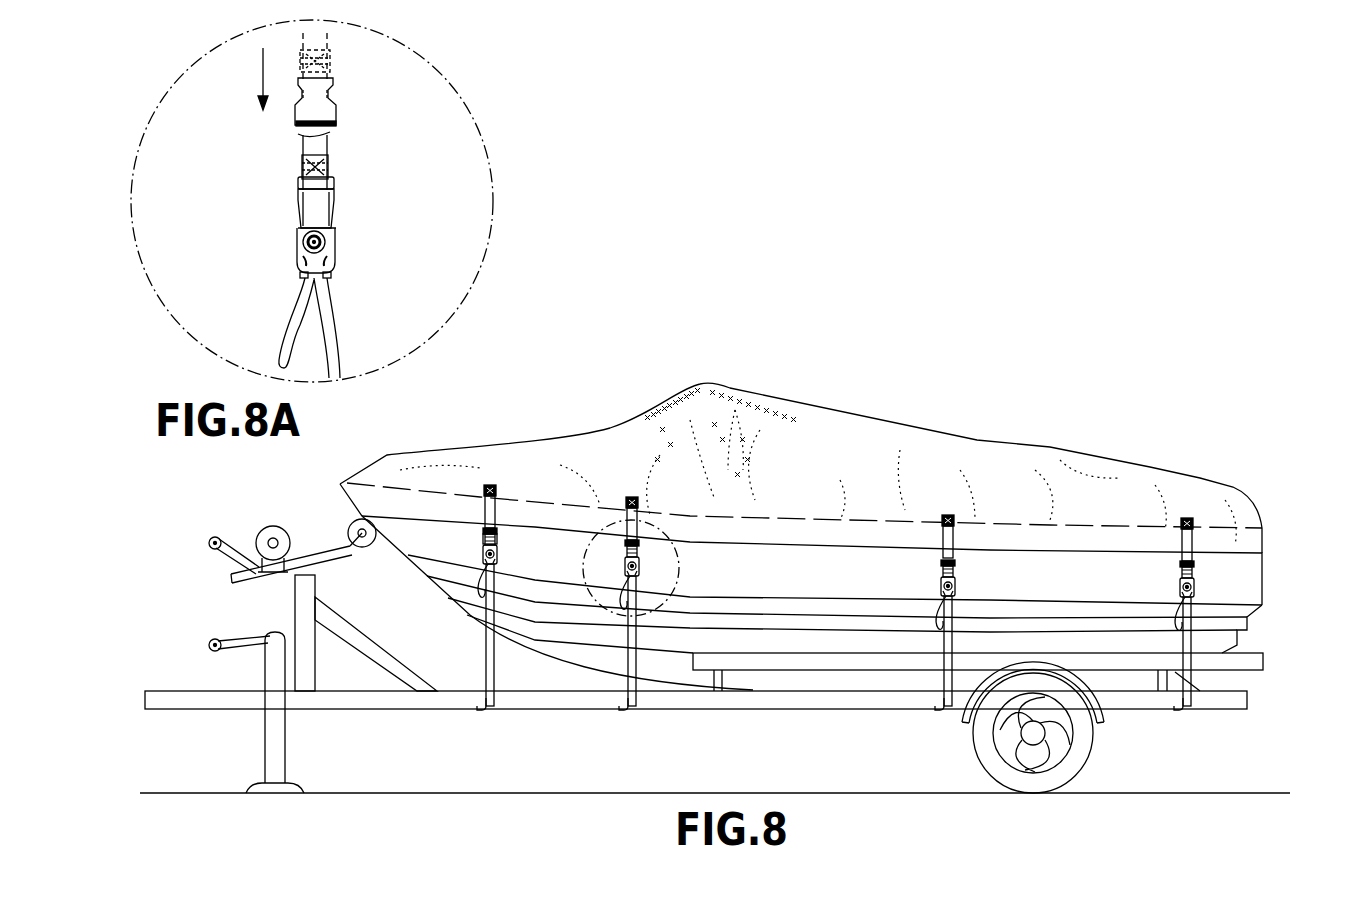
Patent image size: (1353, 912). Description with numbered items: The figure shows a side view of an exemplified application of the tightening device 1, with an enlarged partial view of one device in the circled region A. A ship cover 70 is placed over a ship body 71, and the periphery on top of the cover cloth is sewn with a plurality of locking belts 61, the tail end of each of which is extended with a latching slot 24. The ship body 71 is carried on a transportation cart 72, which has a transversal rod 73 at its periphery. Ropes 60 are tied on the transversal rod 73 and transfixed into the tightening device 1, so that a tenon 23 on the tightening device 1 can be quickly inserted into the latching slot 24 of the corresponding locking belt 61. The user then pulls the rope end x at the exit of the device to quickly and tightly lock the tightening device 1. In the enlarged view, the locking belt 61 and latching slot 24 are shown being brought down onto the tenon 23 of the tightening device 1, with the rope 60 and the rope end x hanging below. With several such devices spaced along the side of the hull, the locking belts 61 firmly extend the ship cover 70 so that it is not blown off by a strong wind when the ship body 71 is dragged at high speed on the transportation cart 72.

In FIG. 8A, the tightening device 1 is at (290, 253).
In FIG. 8, the tightening device 1 is at (660, 568).
In FIG. 8A, the tenon 23 is at (303, 203).
In FIG. 8, the tenon 23 is at (497, 545).
In FIG. 8A, the latching slot 24 is at (320, 101).
In FIG. 8, the latching slot 24 is at (483, 543).
In FIG. 8A, the ropes 60 is at (322, 303).
In FIG. 8, the ropes 60 is at (486, 650).
In FIG. 8A, the locking belts 61 is at (322, 44).
In FIG. 8, the locking belts 61 is at (492, 503).
In FIG. 8, the ship cover 70 is at (876, 440).
In FIG. 8, the ship body 71 is at (1257, 582).
In FIG. 8, the transportation cart 72 is at (188, 698).
In FIG. 8, the transversal rod 73 is at (555, 702).
In FIG. 8, the detail circle A is at (655, 612).
In FIG. 8A, the rope end x is at (283, 328).
In FIG. 8, the rope end x is at (478, 588).